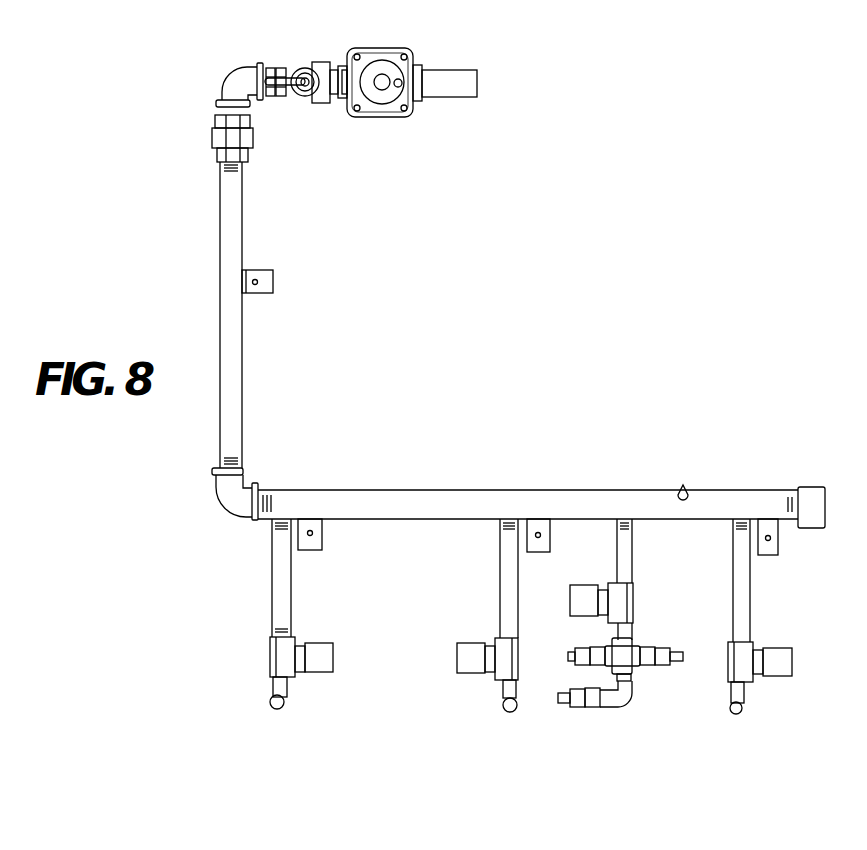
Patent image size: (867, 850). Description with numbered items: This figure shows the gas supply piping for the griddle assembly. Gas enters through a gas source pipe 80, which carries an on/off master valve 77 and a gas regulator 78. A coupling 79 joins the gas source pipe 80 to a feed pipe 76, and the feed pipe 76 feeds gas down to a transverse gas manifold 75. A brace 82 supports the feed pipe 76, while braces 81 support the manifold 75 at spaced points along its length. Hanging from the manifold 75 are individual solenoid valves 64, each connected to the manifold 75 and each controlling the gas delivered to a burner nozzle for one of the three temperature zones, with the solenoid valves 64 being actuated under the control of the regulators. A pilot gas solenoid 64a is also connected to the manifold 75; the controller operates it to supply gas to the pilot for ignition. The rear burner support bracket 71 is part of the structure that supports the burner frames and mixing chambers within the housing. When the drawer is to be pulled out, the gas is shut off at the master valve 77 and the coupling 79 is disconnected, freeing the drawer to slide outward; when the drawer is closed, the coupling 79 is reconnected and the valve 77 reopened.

The on/off master valve 77 is at (302, 70).
The gas regulator 78 is at (395, 53).
The gas source pipe 80 is at (455, 80).
The coupling 79 is at (250, 137).
The feed pipe 76 is at (230, 333).
The brace 82 is at (275, 278).
The transverse gas manifold 75 is at (392, 490).
The braces 81 is at (316, 540).
The solenoid valve 64 is at (458, 657).
The pilot gas solenoid 64a is at (590, 590).
The rear burner support bracket 71 is at (566, 657).